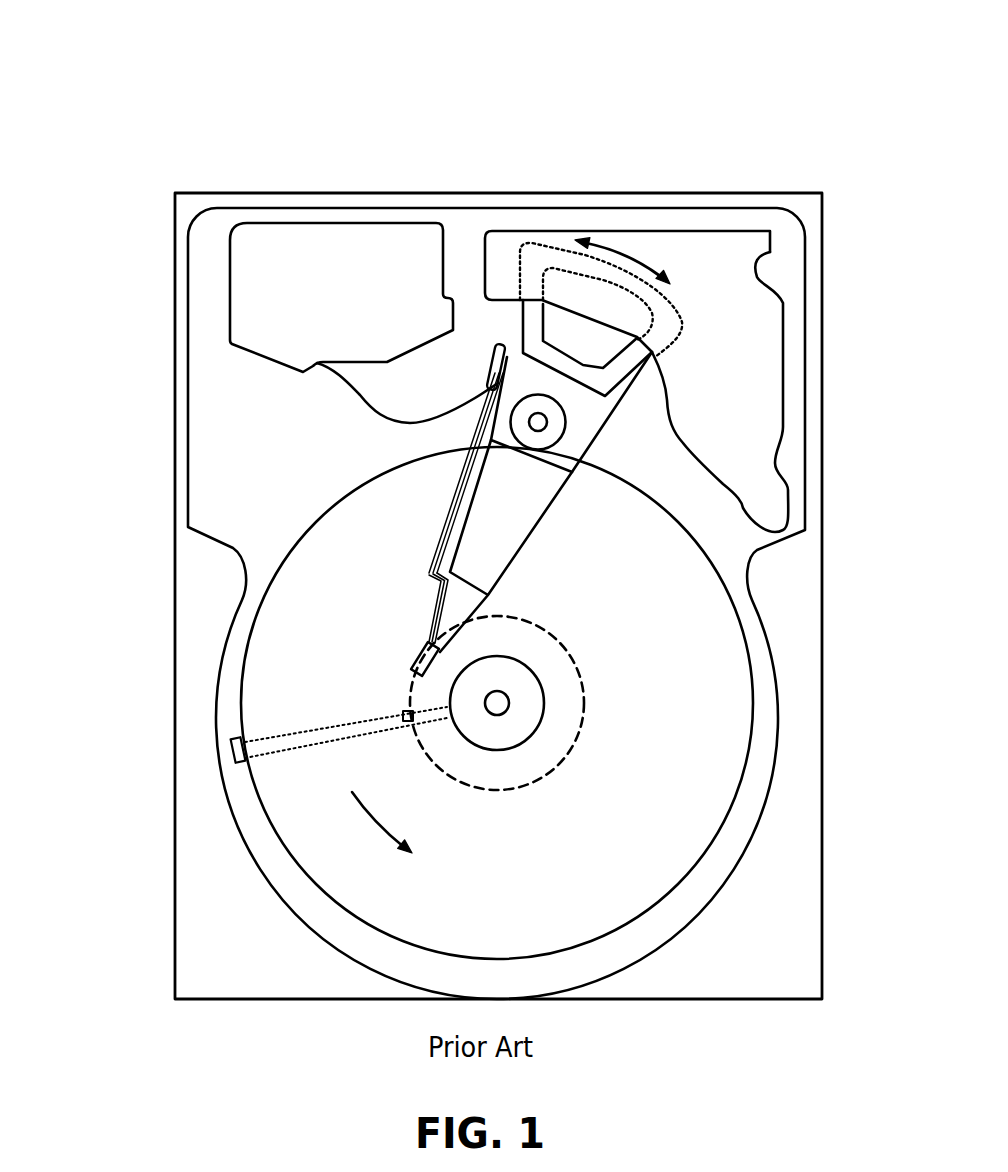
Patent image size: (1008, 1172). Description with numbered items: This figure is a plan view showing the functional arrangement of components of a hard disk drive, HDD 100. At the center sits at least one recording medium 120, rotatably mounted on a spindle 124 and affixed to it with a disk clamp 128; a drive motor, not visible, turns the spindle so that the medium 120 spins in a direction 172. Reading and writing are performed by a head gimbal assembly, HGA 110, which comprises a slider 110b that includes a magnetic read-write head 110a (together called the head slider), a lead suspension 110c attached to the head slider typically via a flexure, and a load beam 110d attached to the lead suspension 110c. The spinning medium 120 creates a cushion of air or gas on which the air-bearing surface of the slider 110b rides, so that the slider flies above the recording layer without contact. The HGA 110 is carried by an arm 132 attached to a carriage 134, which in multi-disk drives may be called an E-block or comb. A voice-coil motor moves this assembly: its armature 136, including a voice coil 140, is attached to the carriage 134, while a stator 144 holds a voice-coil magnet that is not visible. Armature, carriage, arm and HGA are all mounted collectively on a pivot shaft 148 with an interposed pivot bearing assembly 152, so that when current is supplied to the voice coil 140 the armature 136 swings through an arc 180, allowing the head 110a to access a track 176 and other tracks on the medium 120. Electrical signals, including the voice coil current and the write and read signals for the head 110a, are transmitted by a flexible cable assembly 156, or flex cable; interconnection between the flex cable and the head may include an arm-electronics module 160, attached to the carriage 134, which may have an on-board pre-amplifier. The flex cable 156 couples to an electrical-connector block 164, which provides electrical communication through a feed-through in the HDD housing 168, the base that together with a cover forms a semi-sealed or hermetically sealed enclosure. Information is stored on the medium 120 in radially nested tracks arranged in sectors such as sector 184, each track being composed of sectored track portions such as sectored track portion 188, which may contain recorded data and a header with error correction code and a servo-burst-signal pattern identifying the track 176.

The hard disk drive 100 is at (100, 64).
The head gimbal assembly 110 is at (270, 524).
The magnetic read-write head 110a is at (427, 663).
The slider 110b is at (427, 640).
The lead suspension 110c is at (433, 602).
The load beam 110d is at (427, 573).
The recording medium 120 is at (686, 650).
The spindle 124 is at (507, 700).
The disk clamp 128 is at (523, 717).
The arm 132 is at (490, 535).
The carriage 134 is at (582, 451).
The armature 136 is at (515, 337).
The voice coil 140 is at (534, 312).
The stator 144 is at (750, 322).
The pivot shaft 148 is at (547, 422).
The pivot bearing assembly 152 is at (550, 433).
The flexible cable assembly 156 is at (360, 396).
The arm-electronics module 160 is at (492, 378).
The electrical-connector block 164 is at (255, 295).
The HDD housing 168 is at (802, 208).
The direction 172 is at (387, 827).
The track 176 is at (573, 660).
The arc 180 is at (620, 258).
The sector 184 is at (228, 748).
The sectored track portion 188 is at (403, 713).